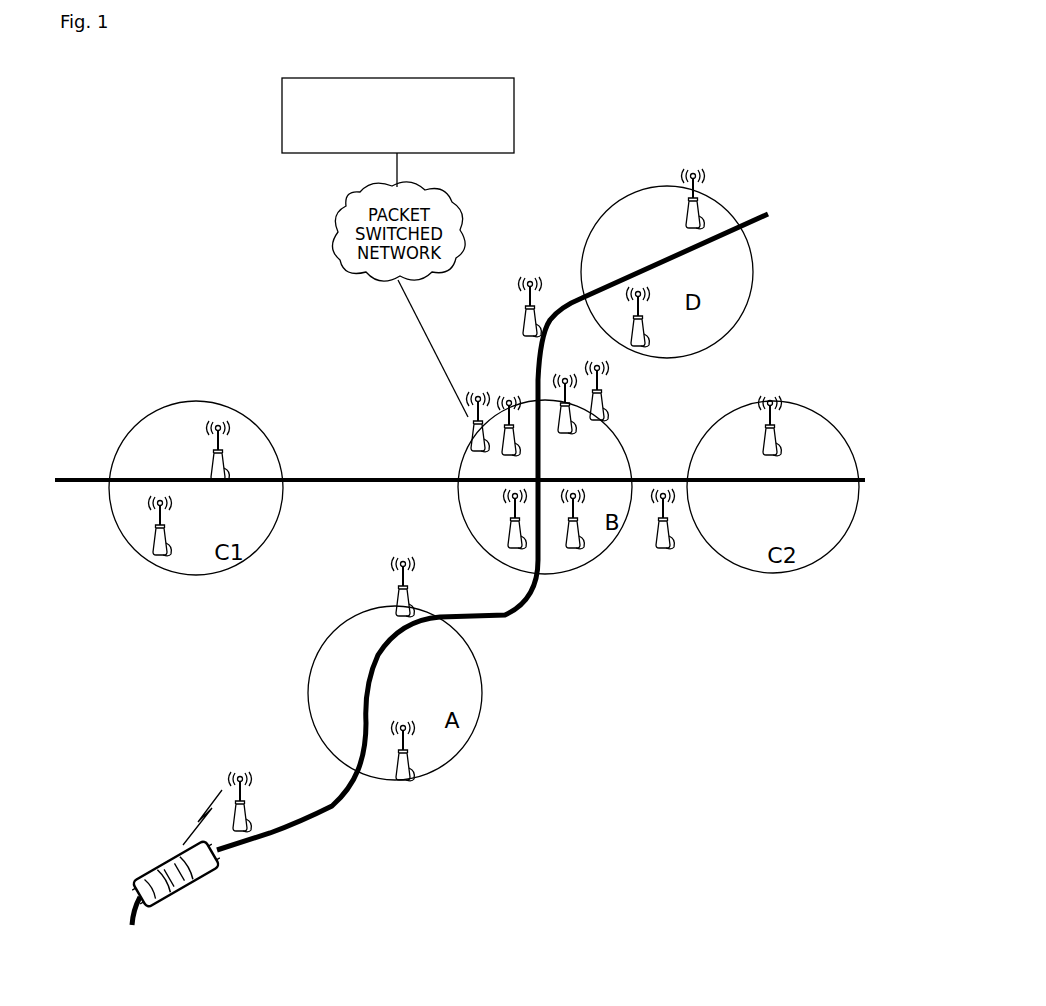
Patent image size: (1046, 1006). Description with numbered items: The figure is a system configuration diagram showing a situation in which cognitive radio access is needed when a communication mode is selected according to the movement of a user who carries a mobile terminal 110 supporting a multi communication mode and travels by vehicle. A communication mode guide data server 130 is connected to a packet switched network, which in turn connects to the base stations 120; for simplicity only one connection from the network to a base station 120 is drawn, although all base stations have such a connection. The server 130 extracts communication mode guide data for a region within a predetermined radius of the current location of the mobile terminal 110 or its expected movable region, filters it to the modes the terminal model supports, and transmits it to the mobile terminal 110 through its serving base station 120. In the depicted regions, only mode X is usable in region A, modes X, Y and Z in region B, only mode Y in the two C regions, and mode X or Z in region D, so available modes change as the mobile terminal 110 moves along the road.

The mobile terminal 110 is at (279, 850).
The base station 120 is at (467, 426).
The communication mode guide data server 130 is at (514, 107).